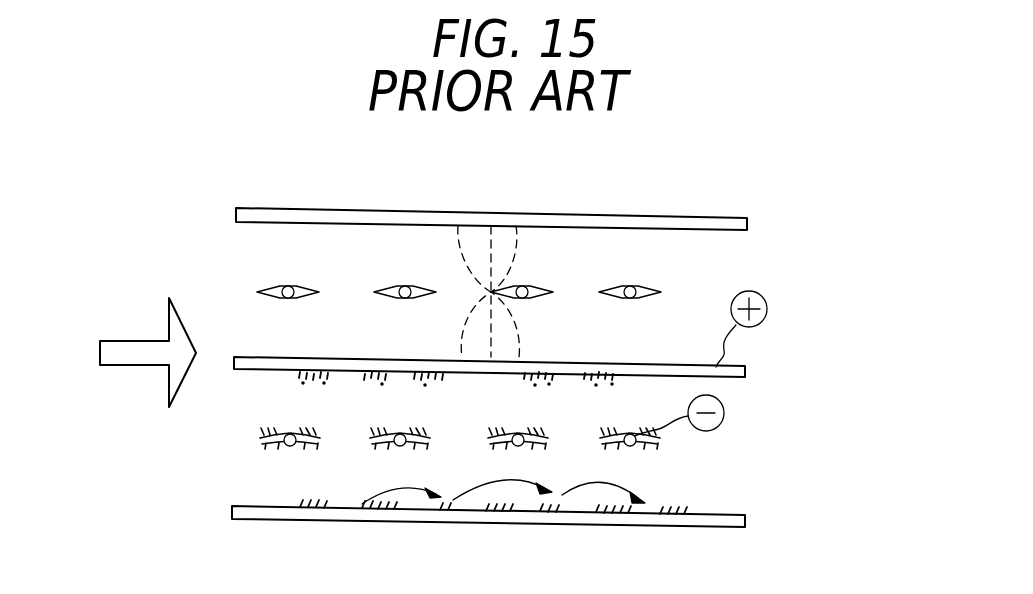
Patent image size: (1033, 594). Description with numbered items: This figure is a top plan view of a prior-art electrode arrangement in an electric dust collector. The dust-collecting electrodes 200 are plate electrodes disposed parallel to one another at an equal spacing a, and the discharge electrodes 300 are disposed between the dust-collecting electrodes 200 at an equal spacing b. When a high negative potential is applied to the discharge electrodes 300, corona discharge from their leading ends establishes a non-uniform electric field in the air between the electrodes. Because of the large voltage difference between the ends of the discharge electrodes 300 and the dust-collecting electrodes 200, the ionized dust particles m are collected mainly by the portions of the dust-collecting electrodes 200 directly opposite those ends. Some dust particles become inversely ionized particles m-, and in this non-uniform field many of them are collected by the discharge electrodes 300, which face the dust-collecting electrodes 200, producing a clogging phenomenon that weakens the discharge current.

The dust-collecting electrodes 200 is at (582, 220).
The discharge electrodes 300 is at (522, 293).
The spacing of dust-collecting electrodes a is at (244, 223).
The spacing of discharge electrodes b is at (408, 253).
The ionized dust particles m is at (314, 495).
The inversely ionized particles m- is at (326, 437).